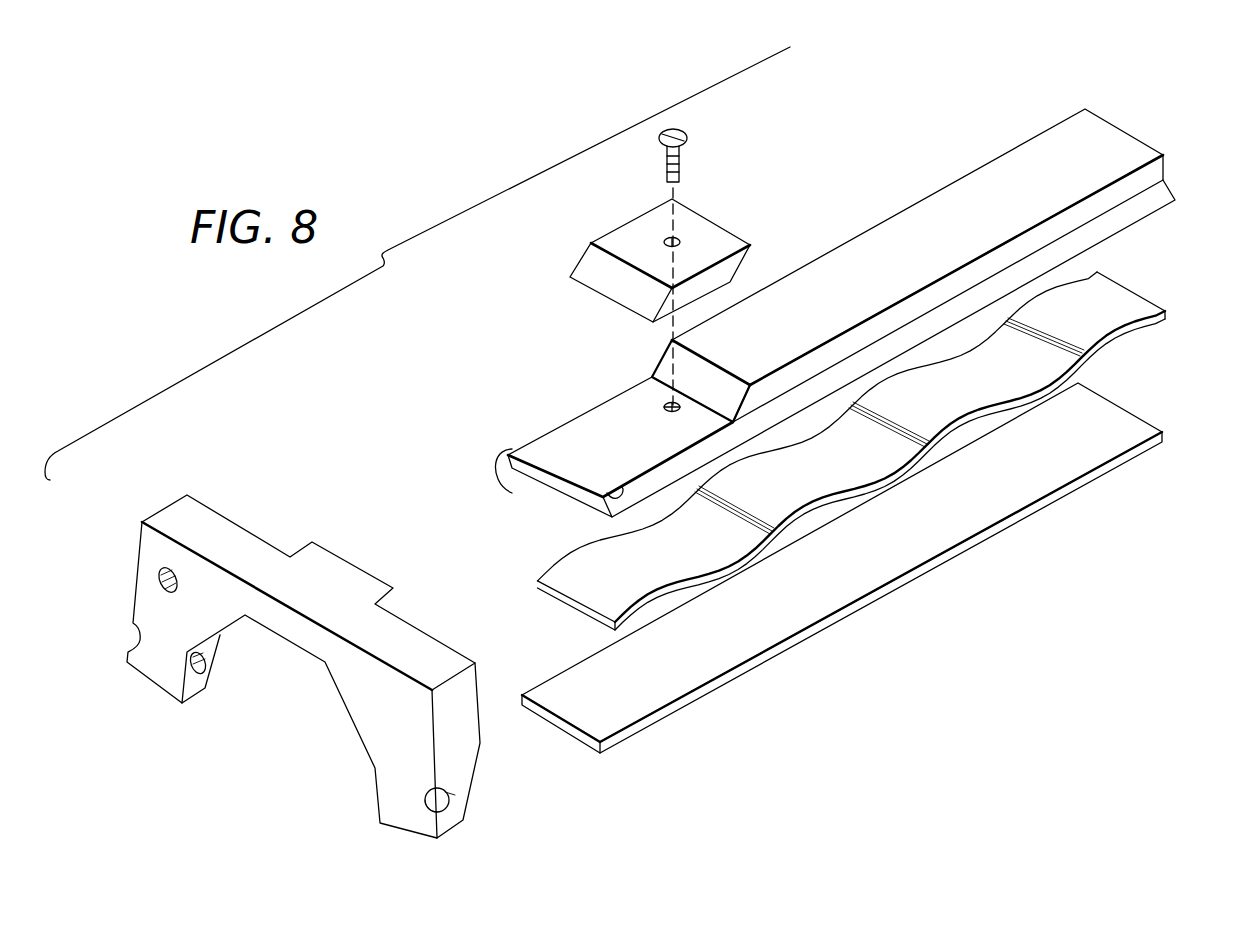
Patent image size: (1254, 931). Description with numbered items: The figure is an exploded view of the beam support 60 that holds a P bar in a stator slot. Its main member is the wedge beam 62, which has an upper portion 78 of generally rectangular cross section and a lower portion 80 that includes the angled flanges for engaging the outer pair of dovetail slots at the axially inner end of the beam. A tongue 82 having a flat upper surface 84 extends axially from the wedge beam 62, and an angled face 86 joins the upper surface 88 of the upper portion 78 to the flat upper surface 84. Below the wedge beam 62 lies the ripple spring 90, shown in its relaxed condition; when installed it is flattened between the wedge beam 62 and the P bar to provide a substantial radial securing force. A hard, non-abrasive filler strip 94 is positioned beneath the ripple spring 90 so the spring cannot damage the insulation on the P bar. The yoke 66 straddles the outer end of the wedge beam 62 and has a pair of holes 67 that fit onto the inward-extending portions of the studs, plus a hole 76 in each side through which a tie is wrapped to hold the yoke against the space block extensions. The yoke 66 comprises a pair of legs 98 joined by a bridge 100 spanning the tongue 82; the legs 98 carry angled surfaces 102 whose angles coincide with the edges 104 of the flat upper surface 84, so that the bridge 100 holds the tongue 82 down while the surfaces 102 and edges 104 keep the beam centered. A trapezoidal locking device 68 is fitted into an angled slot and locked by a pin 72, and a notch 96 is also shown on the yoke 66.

The beam support 60 is at (991, 138).
The wedge beam 62 is at (872, 313).
The yoke 66 is at (301, 647).
The holes 67 is at (158, 580).
The trapezoidal locking device 68 is at (622, 226).
The pin 72 is at (688, 158).
The hole 76 is at (200, 668).
The upper portion 78 is at (1150, 178).
The lower portion 80 is at (1158, 198).
The tongue 82 is at (538, 467).
The flat upper surface 84 is at (607, 448).
The angled face 86 is at (666, 376).
The upper surface 88 is at (814, 296).
The ripple spring 90 is at (1110, 306).
The filler strip 94 is at (1112, 432).
The notch 96 is at (386, 603).
The legs 98 is at (402, 763).
The bridge 100 is at (302, 632).
The angled surfaces 102 is at (232, 630).
The edges 104 is at (600, 490).